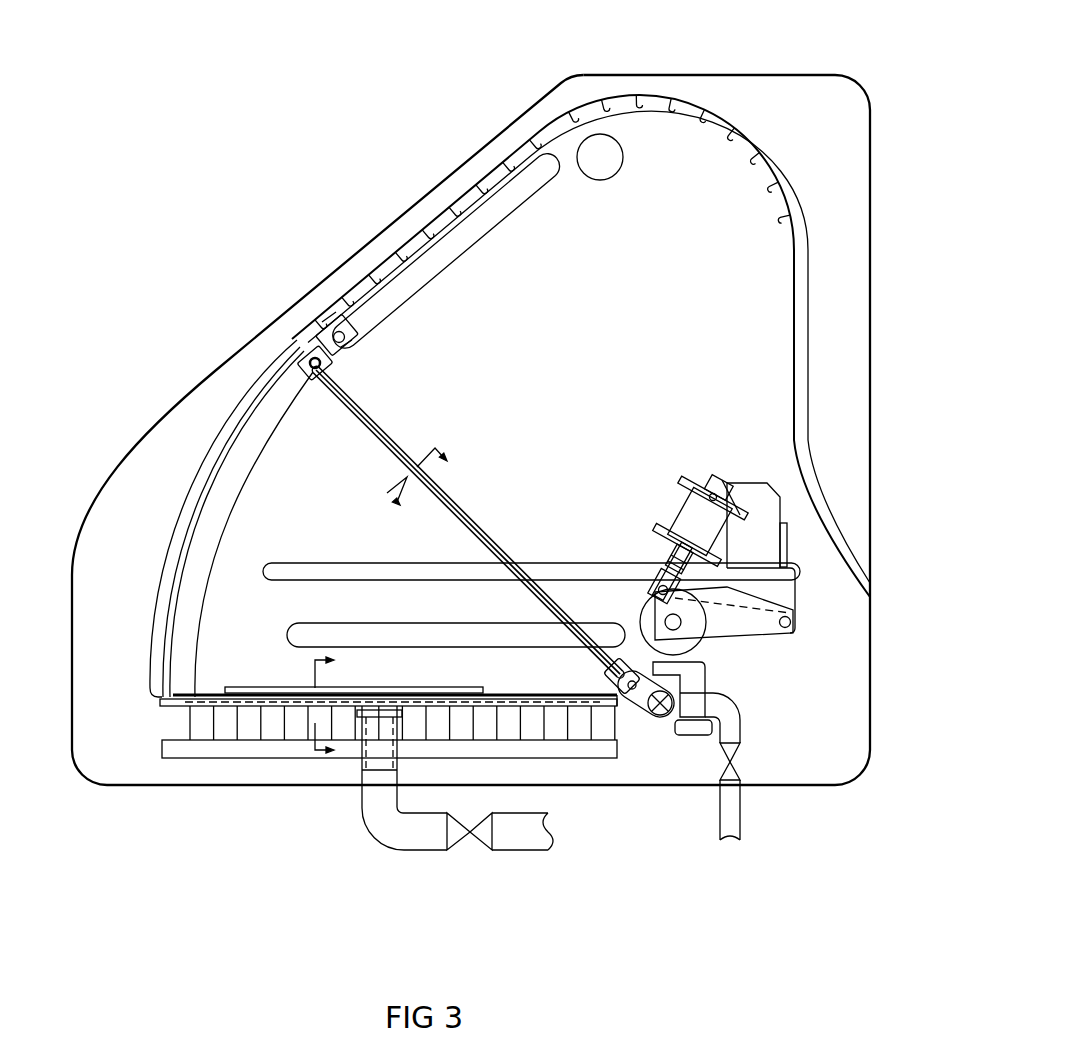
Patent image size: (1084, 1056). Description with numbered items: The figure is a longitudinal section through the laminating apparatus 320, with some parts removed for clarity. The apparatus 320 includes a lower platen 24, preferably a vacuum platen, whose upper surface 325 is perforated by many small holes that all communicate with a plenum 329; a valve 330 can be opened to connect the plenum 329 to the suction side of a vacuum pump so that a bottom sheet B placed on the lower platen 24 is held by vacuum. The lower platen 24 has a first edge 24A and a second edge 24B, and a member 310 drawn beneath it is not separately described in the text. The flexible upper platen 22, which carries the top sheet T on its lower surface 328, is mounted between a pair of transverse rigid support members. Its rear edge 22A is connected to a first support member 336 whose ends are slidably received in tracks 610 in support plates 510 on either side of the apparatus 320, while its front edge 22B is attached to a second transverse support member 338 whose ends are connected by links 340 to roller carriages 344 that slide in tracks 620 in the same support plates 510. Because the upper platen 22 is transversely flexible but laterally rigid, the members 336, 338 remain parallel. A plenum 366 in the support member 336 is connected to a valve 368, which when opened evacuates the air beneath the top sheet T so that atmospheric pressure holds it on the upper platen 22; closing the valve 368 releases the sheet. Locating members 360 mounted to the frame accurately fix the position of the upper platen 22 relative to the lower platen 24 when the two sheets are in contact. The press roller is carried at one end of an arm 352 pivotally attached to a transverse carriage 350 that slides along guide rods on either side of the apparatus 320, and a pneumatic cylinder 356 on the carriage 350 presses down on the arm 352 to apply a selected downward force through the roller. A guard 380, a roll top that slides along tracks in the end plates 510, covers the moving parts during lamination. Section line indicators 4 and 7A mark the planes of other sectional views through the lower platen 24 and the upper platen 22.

The apparatus 320 is at (419, 135).
The support plates 510 is at (793, 110).
The guard 380 is at (398, 245).
The tracks 620 is at (518, 183).
The links 340 is at (306, 328).
The roller carriages 344 is at (327, 318).
The second transverse support member 338 is at (300, 356).
The second edge of lower platen 24B is at (185, 693).
The upper surface of lower platen 325 is at (207, 690).
The upper platen 22 is at (440, 502).
The lower surface of upper platen 328 is at (390, 455).
The top sheet T is at (460, 527).
The front edge of upper platen 22B is at (338, 403).
The rear edge of upper platen 22A is at (605, 655).
The section line 7A is at (431, 485).
The bottom sheet B is at (370, 690).
The pneumatic cylinder 356 is at (688, 478).
The first support member 336 is at (618, 522).
The transverse carriage 350 is at (797, 600).
The arm 352 is at (727, 638).
The locating members 360 is at (663, 677).
The valve 368 is at (737, 757).
The lower platen 24 is at (167, 703).
The first edge of lower platen 24A is at (592, 697).
The tracks 610 is at (293, 648).
The base 310 is at (268, 747).
The section line 4 is at (333, 707).
The plenum 329 is at (363, 747).
The valve 330 is at (477, 840).
The plenum 366 is at (618, 522).